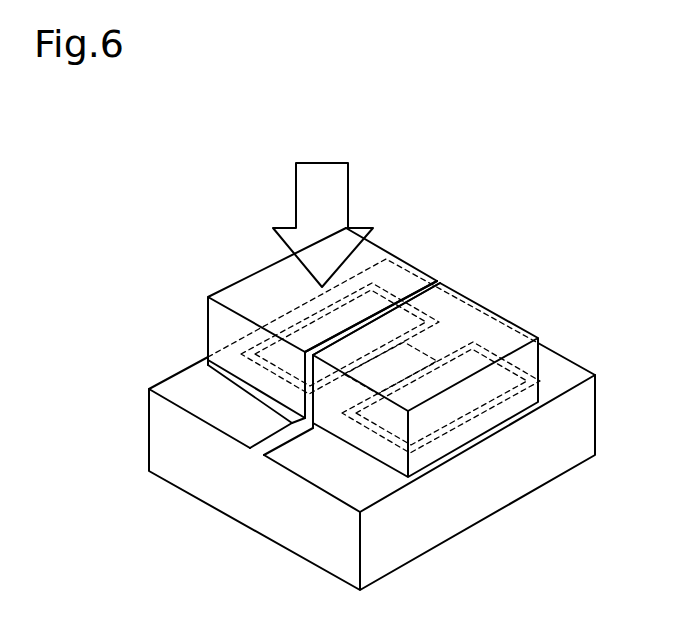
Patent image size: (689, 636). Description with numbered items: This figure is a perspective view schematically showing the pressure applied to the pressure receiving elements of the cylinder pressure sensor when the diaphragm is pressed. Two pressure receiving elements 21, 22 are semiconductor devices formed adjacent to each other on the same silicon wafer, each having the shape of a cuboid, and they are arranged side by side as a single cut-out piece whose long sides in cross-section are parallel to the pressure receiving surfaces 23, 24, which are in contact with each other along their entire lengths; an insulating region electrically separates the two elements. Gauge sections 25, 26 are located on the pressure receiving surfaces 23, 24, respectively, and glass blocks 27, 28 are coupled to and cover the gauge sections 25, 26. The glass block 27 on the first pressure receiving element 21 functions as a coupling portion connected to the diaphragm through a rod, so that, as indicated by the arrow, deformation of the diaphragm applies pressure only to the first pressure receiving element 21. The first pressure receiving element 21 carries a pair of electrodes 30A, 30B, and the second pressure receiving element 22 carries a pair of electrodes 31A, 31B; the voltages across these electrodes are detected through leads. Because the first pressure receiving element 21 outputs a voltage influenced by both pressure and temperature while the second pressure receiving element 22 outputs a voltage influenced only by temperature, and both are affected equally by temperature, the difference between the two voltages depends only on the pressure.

The first pressure receiving element 21 is at (163, 337).
The second pressure receiving element 22 is at (425, 569).
The pressure receiving surface 23 is at (205, 360).
The pressure receiving surface 24 is at (400, 479).
The gauge section 25 is at (292, 322).
The gauge section 26 is at (480, 424).
The glass block 27 is at (364, 242).
The glass block 28 is at (482, 305).
The electrode 30A is at (410, 270).
The electrode 30B is at (172, 388).
The electrode 31A is at (553, 362).
The electrode 31B is at (340, 487).